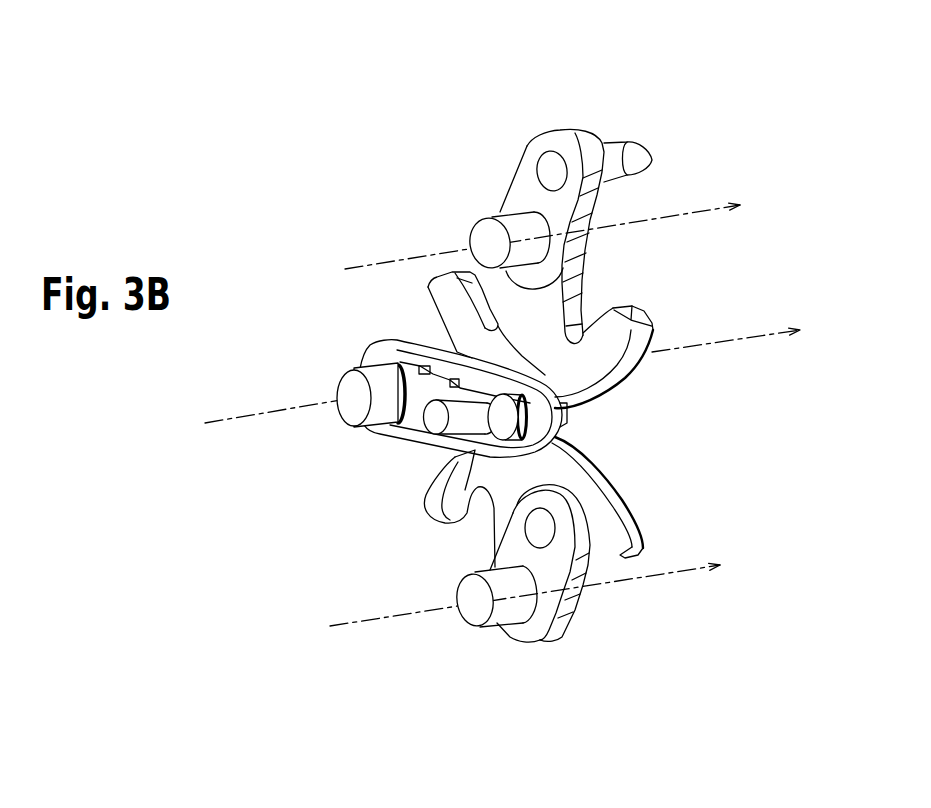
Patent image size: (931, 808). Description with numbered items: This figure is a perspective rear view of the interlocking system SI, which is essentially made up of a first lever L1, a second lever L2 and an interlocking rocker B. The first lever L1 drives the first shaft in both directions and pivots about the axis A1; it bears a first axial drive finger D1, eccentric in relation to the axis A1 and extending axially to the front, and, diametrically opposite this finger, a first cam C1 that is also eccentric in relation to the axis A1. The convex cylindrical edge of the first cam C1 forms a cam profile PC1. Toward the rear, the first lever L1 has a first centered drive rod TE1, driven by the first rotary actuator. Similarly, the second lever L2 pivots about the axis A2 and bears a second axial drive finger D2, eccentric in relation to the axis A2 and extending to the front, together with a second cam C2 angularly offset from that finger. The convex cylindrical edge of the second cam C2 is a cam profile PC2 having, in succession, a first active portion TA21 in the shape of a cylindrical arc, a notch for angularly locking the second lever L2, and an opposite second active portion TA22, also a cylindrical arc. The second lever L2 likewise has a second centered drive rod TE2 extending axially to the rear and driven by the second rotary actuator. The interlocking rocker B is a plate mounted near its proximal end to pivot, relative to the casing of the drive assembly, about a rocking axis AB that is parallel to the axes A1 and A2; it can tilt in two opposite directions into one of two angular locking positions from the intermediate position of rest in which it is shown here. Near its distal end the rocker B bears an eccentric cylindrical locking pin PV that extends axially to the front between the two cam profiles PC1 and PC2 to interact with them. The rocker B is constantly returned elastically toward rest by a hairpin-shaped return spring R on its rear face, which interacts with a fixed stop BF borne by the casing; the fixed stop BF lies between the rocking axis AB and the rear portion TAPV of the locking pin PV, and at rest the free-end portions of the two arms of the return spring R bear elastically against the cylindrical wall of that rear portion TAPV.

The interlocking system SI is at (592, 100).
The first lever L1 is at (587, 247).
The second lever L2 is at (559, 620).
The first axial drive finger D1 is at (624, 165).
The second axial drive finger D2 is at (534, 525).
The first centered drive rod TE1 is at (488, 242).
The second centered drive rod TE2 is at (478, 601).
The pivot axis of the first lever A1 is at (564, 228).
The pivot axis of the second lever A2 is at (546, 587).
The rocking axis AB is at (744, 333).
The locking pin PV is at (572, 425).
The first cam profile PC1 is at (640, 360).
The second cam profile PC2 is at (640, 527).
The first cam C1 is at (609, 343).
The second cam C2 is at (432, 488).
The first active portion of the second cam profile TA21 is at (434, 478).
The second active portion of the second cam profile TA22 is at (622, 503).
The rear portion of the locking pin TAPV is at (493, 418).
The interlocking rocker B is at (361, 353).
The fixed stop BF is at (391, 426).
The return spring R is at (414, 368).